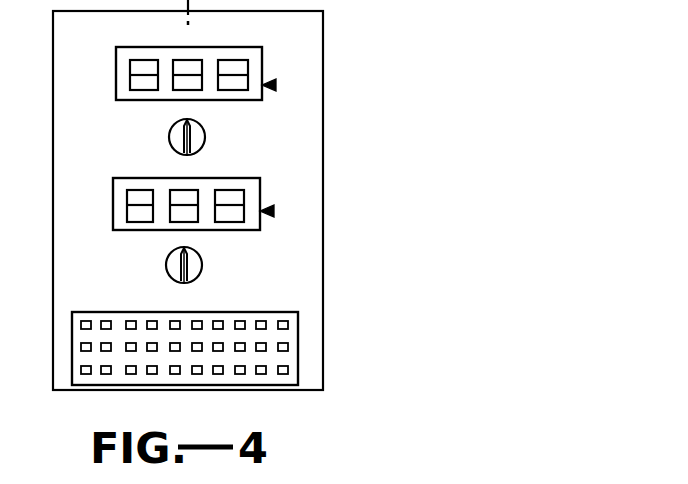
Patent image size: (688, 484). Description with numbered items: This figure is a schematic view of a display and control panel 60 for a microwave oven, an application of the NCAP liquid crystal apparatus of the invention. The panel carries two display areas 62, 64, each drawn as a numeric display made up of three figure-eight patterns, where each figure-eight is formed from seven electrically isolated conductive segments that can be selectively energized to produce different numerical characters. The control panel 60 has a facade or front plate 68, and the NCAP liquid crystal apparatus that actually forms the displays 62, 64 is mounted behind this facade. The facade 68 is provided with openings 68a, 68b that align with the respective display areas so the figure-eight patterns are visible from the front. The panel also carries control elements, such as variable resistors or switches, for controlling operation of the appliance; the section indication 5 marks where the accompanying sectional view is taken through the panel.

The display and control panel 60 is at (307, 121).
The display area 62 is at (262, 58).
The display area 64 is at (260, 190).
The facade or front plate 68 is at (310, 342).
The opening 68a is at (275, 85).
The opening 68b is at (273, 211).
The section view direction arrow 5 is at (184, 291).